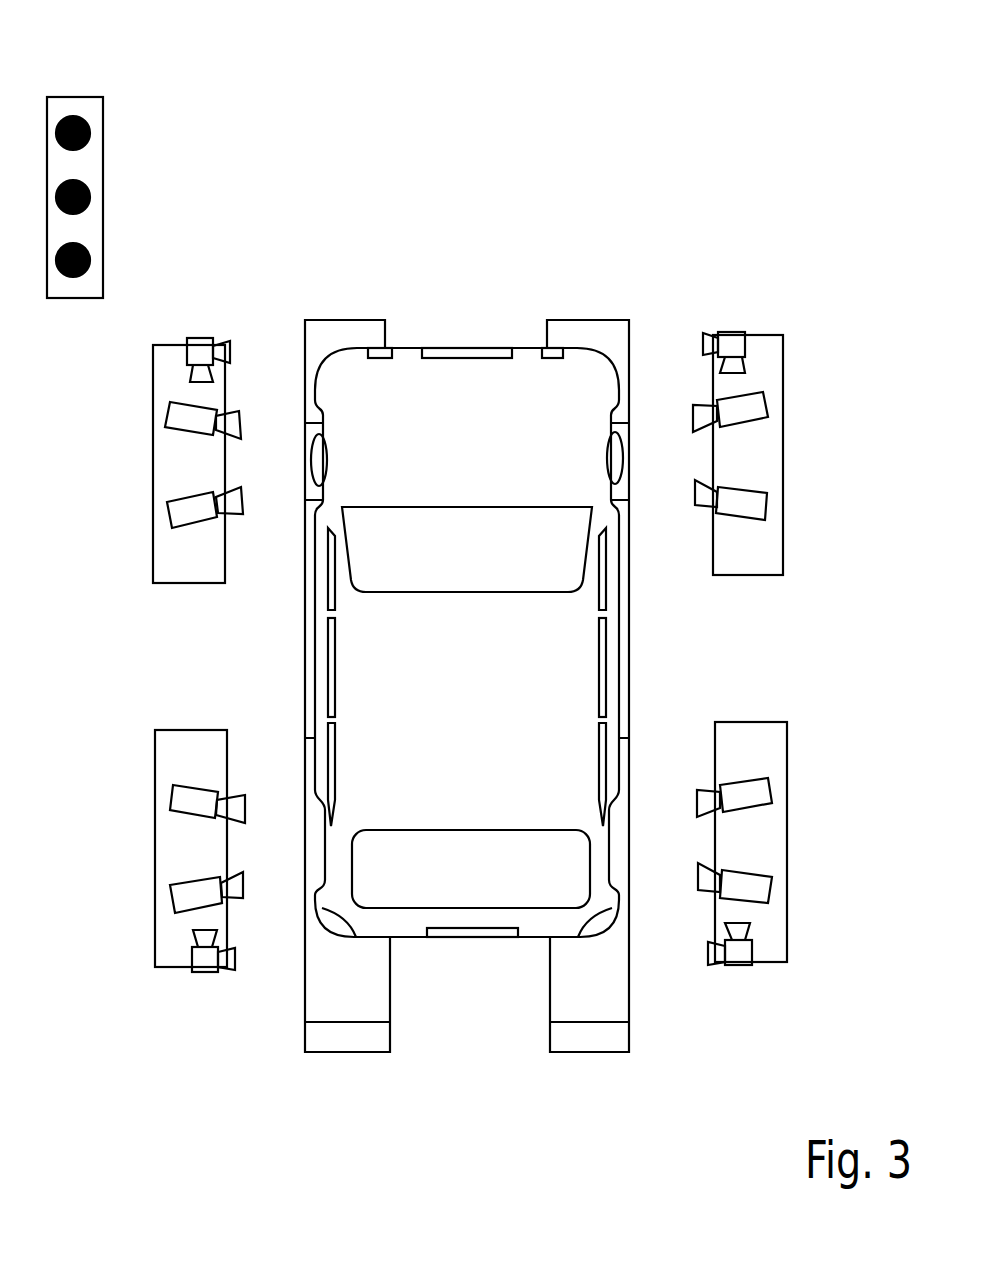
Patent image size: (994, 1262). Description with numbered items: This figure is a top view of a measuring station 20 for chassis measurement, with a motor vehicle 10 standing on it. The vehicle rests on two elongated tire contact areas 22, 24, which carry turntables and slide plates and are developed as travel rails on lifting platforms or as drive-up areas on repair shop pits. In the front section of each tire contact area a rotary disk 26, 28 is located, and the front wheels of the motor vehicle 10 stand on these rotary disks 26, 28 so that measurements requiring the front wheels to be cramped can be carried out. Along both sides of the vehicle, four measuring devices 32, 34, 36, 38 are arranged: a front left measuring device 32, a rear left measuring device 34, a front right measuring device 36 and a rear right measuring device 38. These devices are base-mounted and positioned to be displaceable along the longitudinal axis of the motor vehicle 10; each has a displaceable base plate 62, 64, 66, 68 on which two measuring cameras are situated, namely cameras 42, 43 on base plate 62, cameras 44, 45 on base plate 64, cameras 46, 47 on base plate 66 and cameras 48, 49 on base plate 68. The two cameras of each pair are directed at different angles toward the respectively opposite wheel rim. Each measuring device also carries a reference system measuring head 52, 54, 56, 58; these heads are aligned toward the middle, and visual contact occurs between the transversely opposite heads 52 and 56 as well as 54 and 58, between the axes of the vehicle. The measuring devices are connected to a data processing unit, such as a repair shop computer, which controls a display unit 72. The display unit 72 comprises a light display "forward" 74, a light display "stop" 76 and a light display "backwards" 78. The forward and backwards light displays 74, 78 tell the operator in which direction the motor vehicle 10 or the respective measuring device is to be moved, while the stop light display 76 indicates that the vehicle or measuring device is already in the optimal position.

The motor vehicle 10 is at (460, 940).
The measuring station 20 is at (465, 587).
The tire contact area 22 is at (343, 335).
The tire contact area 24 is at (588, 332).
The rotary disk 26 is at (318, 460).
The rotary disk 28 is at (621, 457).
The front left measuring device 32 is at (139, 506).
The rear left measuring device 34 is at (141, 896).
The front right measuring device 36 is at (807, 493).
The rear right measuring device 38 is at (812, 888).
The measuring camera 42 is at (178, 420).
The measuring camera 43 is at (178, 512).
The measuring camera 44 is at (182, 805).
The measuring camera 45 is at (182, 895).
The measuring camera 46 is at (750, 413).
The measuring camera 47 is at (755, 505).
The measuring camera 48 is at (760, 797).
The measuring camera 49 is at (758, 890).
The reference system measuring head 52 is at (200, 355).
The reference system measuring head 54 is at (205, 975).
The reference system measuring head 56 is at (735, 347).
The reference system measuring head 58 is at (740, 956).
The base plate 62 is at (170, 460).
The base plate 64 is at (172, 845).
The base plate 66 is at (765, 450).
The base plate 68 is at (768, 838).
The display unit 72 is at (120, 152).
The light display "forward" 74 is at (90, 132).
The light display "stop" 76 is at (90, 196).
The light display "backwards" 78 is at (90, 259).